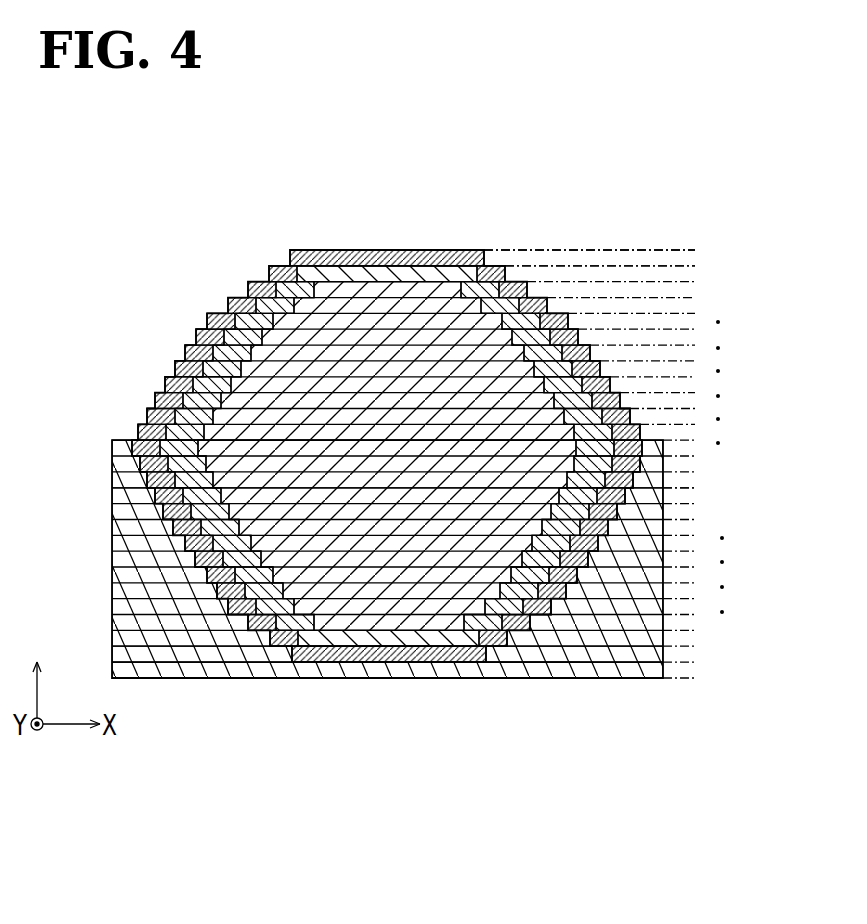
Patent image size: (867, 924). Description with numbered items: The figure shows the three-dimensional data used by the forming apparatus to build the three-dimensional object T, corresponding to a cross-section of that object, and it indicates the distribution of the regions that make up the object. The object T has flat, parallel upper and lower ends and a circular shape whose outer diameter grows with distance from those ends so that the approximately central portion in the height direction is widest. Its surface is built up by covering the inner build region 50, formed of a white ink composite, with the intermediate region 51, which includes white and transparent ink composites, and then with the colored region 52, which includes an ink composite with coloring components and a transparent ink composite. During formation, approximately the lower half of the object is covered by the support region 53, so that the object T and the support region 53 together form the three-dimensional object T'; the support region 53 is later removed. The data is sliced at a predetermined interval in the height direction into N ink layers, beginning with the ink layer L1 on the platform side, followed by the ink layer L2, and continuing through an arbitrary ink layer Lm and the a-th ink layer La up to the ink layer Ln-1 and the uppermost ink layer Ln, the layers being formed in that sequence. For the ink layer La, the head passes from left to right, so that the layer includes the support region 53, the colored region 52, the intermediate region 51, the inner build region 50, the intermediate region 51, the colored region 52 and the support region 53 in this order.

The three-dimensional object T is at (403, 431).
The three-dimensional object with support region T' is at (403, 605).
The inner build region 50 is at (353, 660).
The intermediate region 51 is at (405, 660).
The colored region 52 is at (460, 660).
The support region 53 is at (535, 668).
The ink layer Ln is at (683, 258).
The ink layer Ln-1 is at (683, 272).
The ink layer La is at (683, 498).
The ink layer Lm is at (112, 491).
The ink layer L2 is at (688, 654).
The ink layer L1 is at (688, 670).